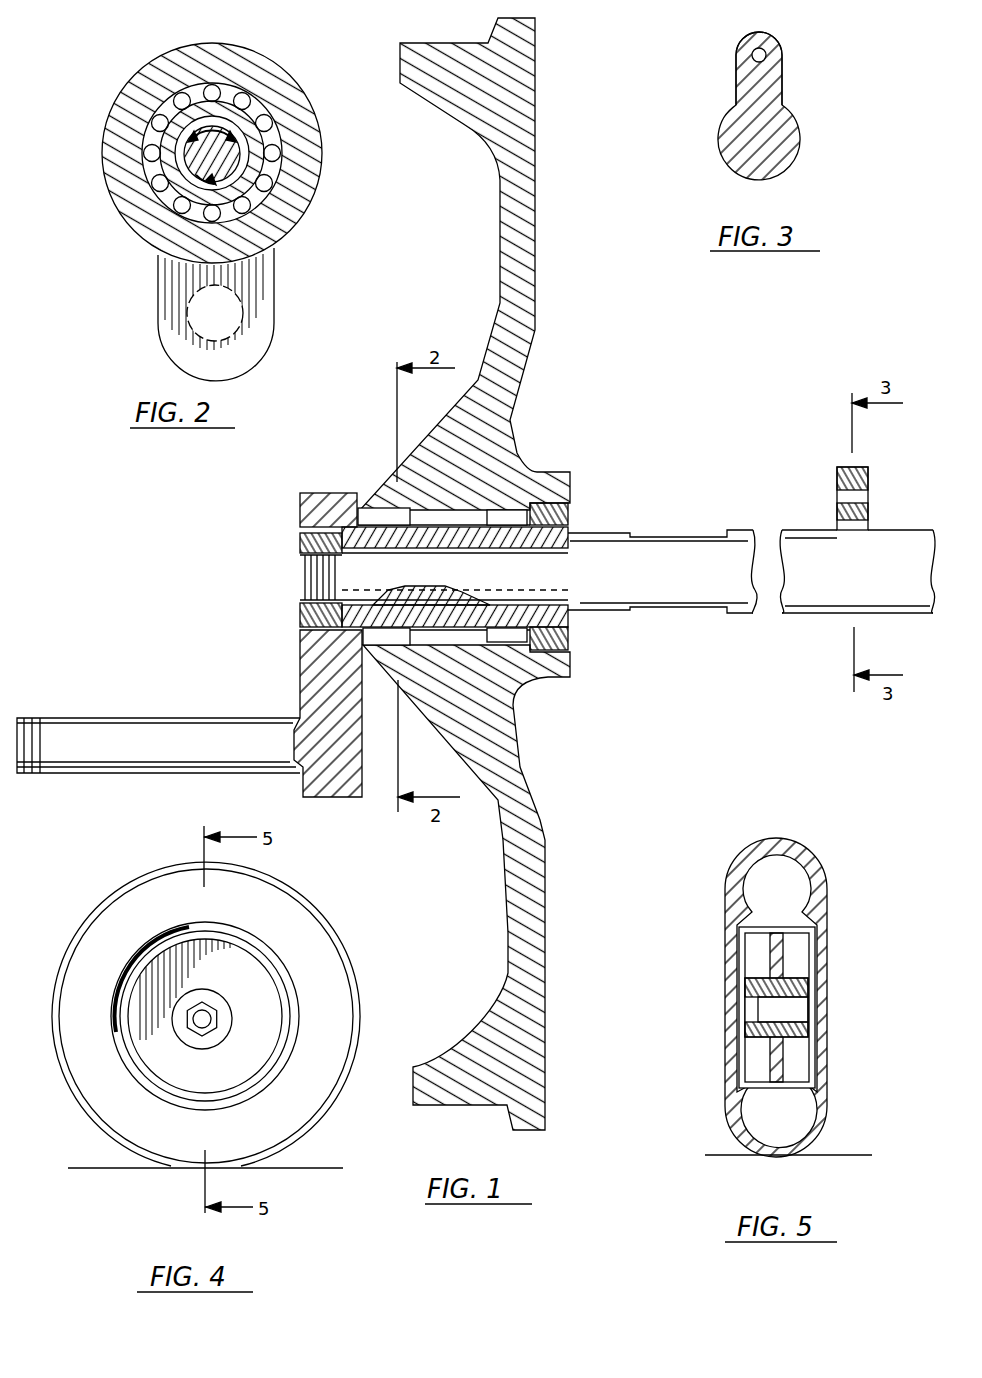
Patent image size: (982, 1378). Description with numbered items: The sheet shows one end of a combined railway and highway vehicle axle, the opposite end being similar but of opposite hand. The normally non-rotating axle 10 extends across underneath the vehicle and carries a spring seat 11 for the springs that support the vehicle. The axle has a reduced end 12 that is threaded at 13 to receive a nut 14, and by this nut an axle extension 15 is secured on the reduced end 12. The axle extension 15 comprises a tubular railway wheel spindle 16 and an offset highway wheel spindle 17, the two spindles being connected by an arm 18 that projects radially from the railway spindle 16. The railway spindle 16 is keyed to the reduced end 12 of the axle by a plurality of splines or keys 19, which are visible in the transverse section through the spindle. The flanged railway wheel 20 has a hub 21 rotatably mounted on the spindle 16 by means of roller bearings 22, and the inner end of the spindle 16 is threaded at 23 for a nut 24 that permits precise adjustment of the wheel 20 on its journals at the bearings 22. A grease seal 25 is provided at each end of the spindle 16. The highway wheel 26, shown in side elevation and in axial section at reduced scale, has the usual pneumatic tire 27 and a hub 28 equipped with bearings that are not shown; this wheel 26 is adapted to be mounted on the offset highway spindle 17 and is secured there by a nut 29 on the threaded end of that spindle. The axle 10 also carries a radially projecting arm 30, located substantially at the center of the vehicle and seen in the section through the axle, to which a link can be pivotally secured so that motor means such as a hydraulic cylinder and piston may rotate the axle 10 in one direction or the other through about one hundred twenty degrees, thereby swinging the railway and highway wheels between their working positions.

In FIG. 1, the axle 10 is at (800, 527).
In FIG. 3, the axle 10 is at (800, 140).
In FIG. 1, the spring seat 11 is at (716, 533).
In FIG. 1, the reduced end 12 is at (562, 562).
In FIG. 2, the reduced end 12 is at (300, 223).
In FIG. 1, the thread 13 is at (300, 587).
In FIG. 1, the nut 14 is at (298, 545).
In FIG. 1, the axle extension 15 is at (293, 483).
In FIG. 1, the railway wheel spindle 16 is at (462, 530).
In FIG. 2, the railway wheel spindle 16 is at (155, 70).
In FIG. 1, the highway wheel spindle 17 is at (142, 732).
In FIG. 2, the highway wheel spindle 17 is at (240, 328).
In FIG. 4, the highway wheel spindle 17 is at (202, 1017).
In FIG. 1, the arm 18 is at (302, 677).
In FIG. 2, the arm 18 is at (158, 293).
In FIG. 1, the splines or keys 19 is at (463, 588).
In FIG. 2, the splines or keys 19 is at (208, 182).
In FIG. 1, the flanged railway wheel 20 is at (538, 258).
In FIG. 1, the hub 21 is at (378, 478).
In FIG. 2, the hub 21 is at (323, 150).
In FIG. 1, the roller bearings 22 is at (503, 633).
In FIG. 2, the roller bearings 22 is at (243, 97).
In FIG. 1, the thread 23 is at (573, 613).
In FIG. 1, the nut 24 is at (573, 647).
In FIG. 1, the grease seal 25 is at (527, 505).
In FIG. 4, the highway wheel 26 is at (273, 1000).
In FIG. 5, the highway wheel 26 is at (803, 937).
In FIG. 4, the pneumatic tire 27 is at (293, 912).
In FIG. 5, the pneumatic tire 27 is at (810, 852).
In FIG. 5, the hub 28 is at (805, 990).
In FIG. 4, the nut 29 is at (203, 1033).
In FIG. 1, the arm 30 is at (870, 503).
In FIG. 3, the arm 30 is at (783, 66).